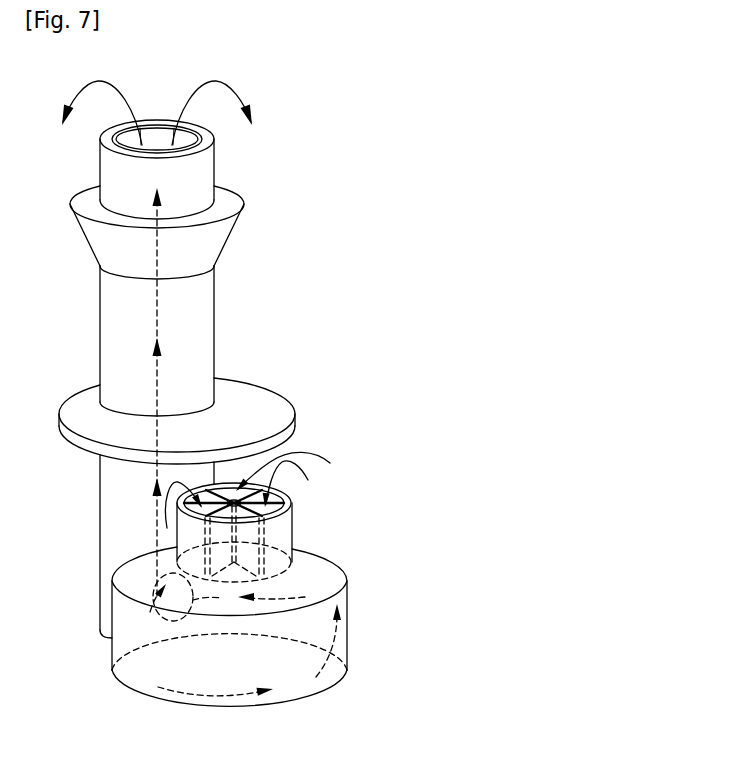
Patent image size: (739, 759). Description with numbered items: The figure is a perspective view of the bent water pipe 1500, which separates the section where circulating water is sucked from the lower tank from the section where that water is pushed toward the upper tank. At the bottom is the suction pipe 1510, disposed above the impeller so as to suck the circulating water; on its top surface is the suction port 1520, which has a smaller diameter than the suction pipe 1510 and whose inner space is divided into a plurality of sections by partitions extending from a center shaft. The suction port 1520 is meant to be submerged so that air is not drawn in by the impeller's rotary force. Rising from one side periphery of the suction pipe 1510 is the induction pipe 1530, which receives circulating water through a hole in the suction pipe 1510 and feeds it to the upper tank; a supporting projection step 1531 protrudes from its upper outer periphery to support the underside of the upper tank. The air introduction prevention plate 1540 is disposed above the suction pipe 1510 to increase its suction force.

The bent water pipe 1500 is at (325, 393).
The suction pipe 1510 is at (347, 604).
The suction port 1520 is at (288, 528).
The induction pipe 1530 is at (190, 332).
The supporting projection step 1531 is at (223, 200).
The air introduction prevention plate 1540 is at (263, 415).